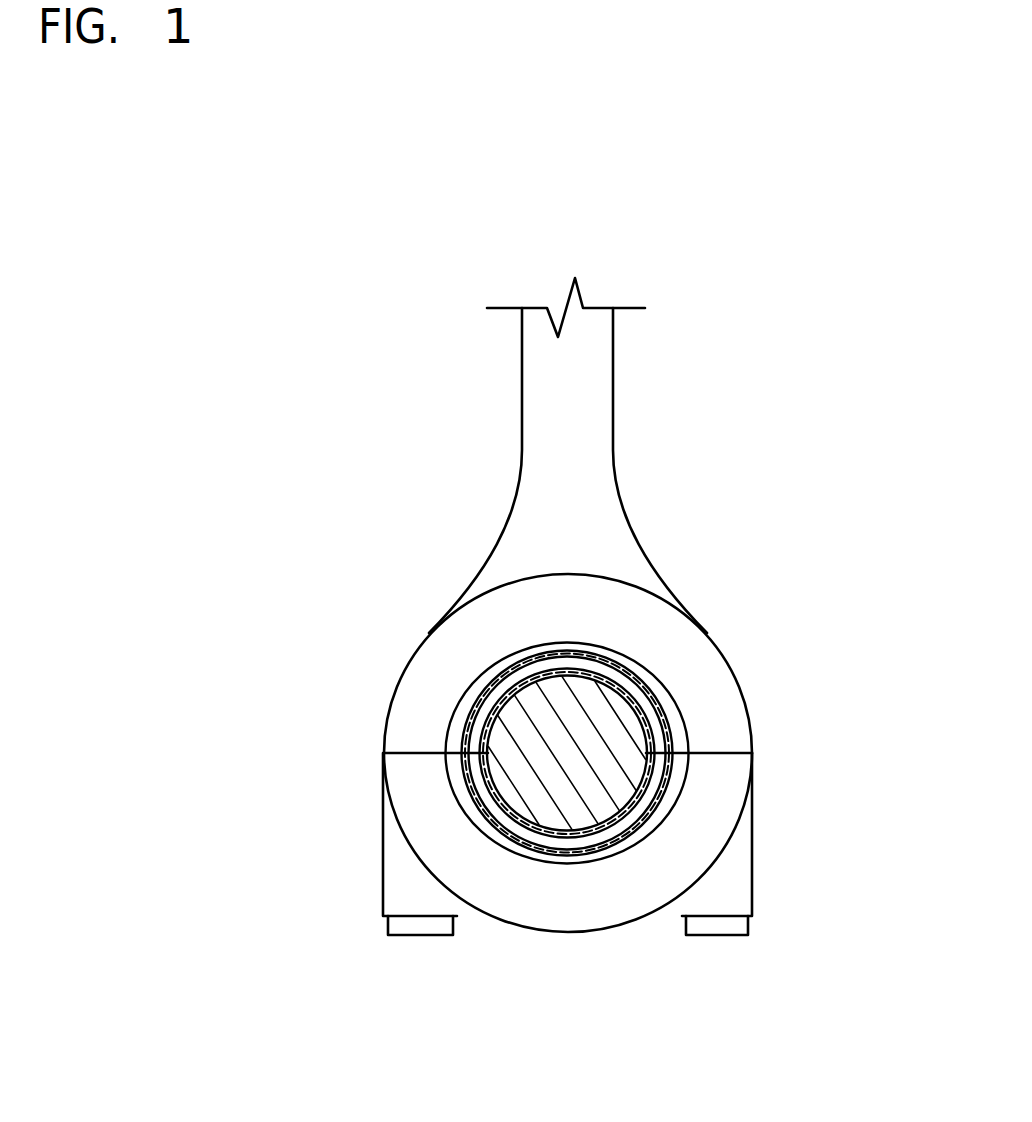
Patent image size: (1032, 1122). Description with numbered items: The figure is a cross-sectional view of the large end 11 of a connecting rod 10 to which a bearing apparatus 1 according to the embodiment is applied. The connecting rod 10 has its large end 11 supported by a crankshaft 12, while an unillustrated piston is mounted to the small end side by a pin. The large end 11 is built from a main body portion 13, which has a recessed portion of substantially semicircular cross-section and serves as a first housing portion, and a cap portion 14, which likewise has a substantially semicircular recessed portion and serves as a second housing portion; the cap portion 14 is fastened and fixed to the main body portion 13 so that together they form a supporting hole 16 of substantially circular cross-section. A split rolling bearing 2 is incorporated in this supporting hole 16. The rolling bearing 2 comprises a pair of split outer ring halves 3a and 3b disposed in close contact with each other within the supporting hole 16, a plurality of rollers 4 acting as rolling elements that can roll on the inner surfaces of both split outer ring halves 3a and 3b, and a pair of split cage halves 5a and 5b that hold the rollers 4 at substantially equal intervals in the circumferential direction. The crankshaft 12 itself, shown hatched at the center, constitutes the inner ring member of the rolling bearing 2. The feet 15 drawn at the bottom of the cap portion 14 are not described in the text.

The bearing apparatus 1 is at (778, 695).
The split rolling bearing 2 is at (587, 863).
The split outer ring half 3a is at (550, 643).
The split outer ring half 3b is at (555, 863).
The rollers 4 is at (515, 664).
The split cage half 5a is at (618, 652).
The split cage half 5b is at (525, 833).
The connecting rod 10 is at (693, 597).
The large end 11 is at (258, 703).
The crankshaft 12 is at (527, 745).
The main body portion 13 is at (401, 720).
The cap portion 14 is at (393, 870).
The mounting feet 15 is at (427, 928).
The supporting hole 16 is at (653, 683).